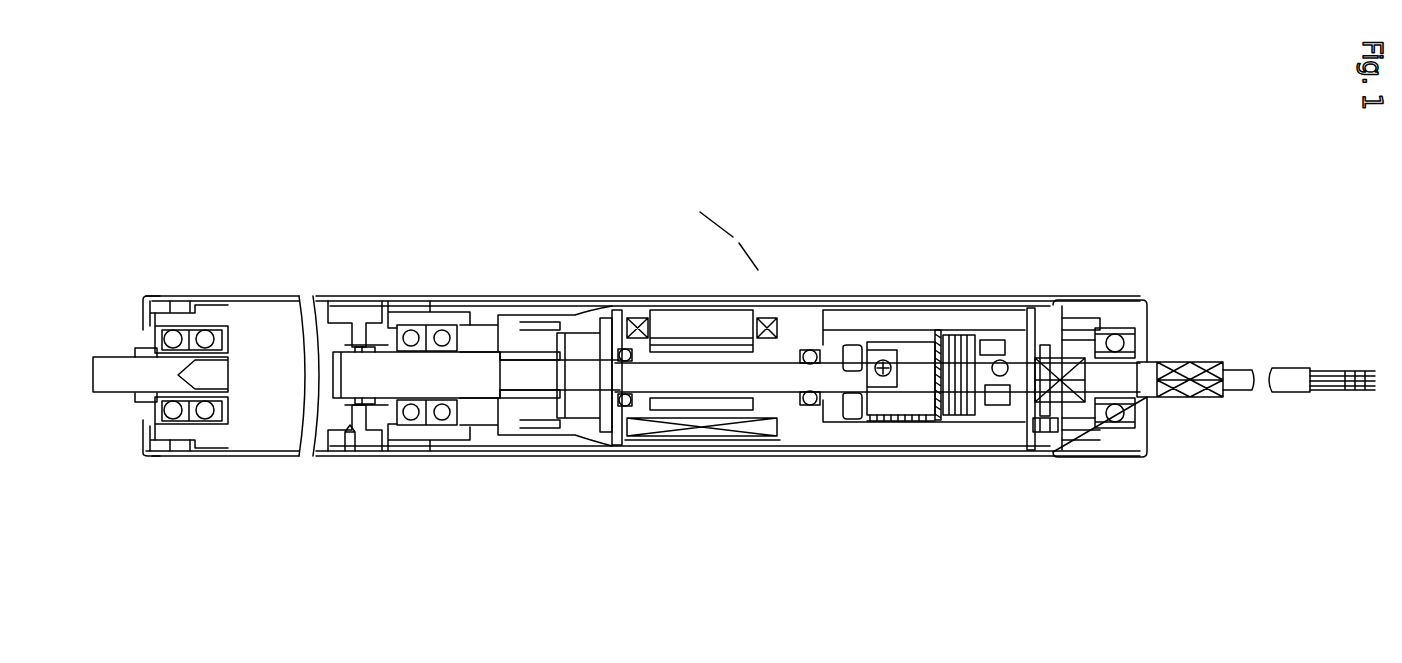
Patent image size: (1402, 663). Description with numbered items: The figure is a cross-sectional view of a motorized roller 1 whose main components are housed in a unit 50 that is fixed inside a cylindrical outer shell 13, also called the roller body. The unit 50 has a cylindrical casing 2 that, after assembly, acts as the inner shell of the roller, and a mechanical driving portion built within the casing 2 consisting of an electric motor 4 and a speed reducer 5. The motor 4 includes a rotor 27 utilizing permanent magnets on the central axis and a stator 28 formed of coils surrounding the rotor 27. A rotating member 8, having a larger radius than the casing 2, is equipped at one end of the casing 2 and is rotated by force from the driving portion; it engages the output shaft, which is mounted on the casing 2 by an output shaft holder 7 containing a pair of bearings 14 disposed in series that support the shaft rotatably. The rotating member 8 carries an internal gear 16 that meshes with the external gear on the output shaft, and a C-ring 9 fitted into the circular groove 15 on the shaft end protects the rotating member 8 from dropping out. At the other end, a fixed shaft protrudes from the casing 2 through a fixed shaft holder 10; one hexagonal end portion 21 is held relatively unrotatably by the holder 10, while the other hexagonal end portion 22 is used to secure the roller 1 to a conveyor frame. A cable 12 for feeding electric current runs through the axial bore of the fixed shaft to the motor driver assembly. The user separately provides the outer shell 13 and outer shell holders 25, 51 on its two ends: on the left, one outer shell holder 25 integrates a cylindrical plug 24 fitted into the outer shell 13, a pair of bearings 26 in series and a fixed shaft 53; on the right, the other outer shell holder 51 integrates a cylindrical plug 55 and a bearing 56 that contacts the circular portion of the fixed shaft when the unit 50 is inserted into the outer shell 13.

The motorized roller 1 is at (1040, 255).
The cylindrical casing 2 is at (797, 300).
The electric motor 4 is at (729, 241).
The speed reducer 5 is at (530, 312).
The output shaft holder 7 is at (430, 315).
The rotating member 8 is at (362, 312).
The C-ring 9 is at (335, 440).
The fixed shaft holder 10 is at (1080, 308).
The cable 12 is at (1287, 380).
The cylindrical outer shell 13 is at (268, 297).
The bearings 14 is at (446, 333).
The circular groove 15 is at (333, 398).
The internal gear 16 is at (372, 400).
The end portion 21 is at (1068, 395).
The end portion 22 is at (1190, 370).
The cylindrical plug 24 is at (155, 315).
The outer shell holder 25 is at (177, 295).
The bearings 26 is at (205, 337).
The rotor 27 is at (715, 373).
The stator 28 is at (693, 328).
The unit 50 is at (888, 320).
The outer shell holder 51 is at (1120, 320).
The fixed shaft 53 is at (125, 383).
The cylindrical plug 55 is at (1140, 340).
The bearing 56 is at (1133, 422).